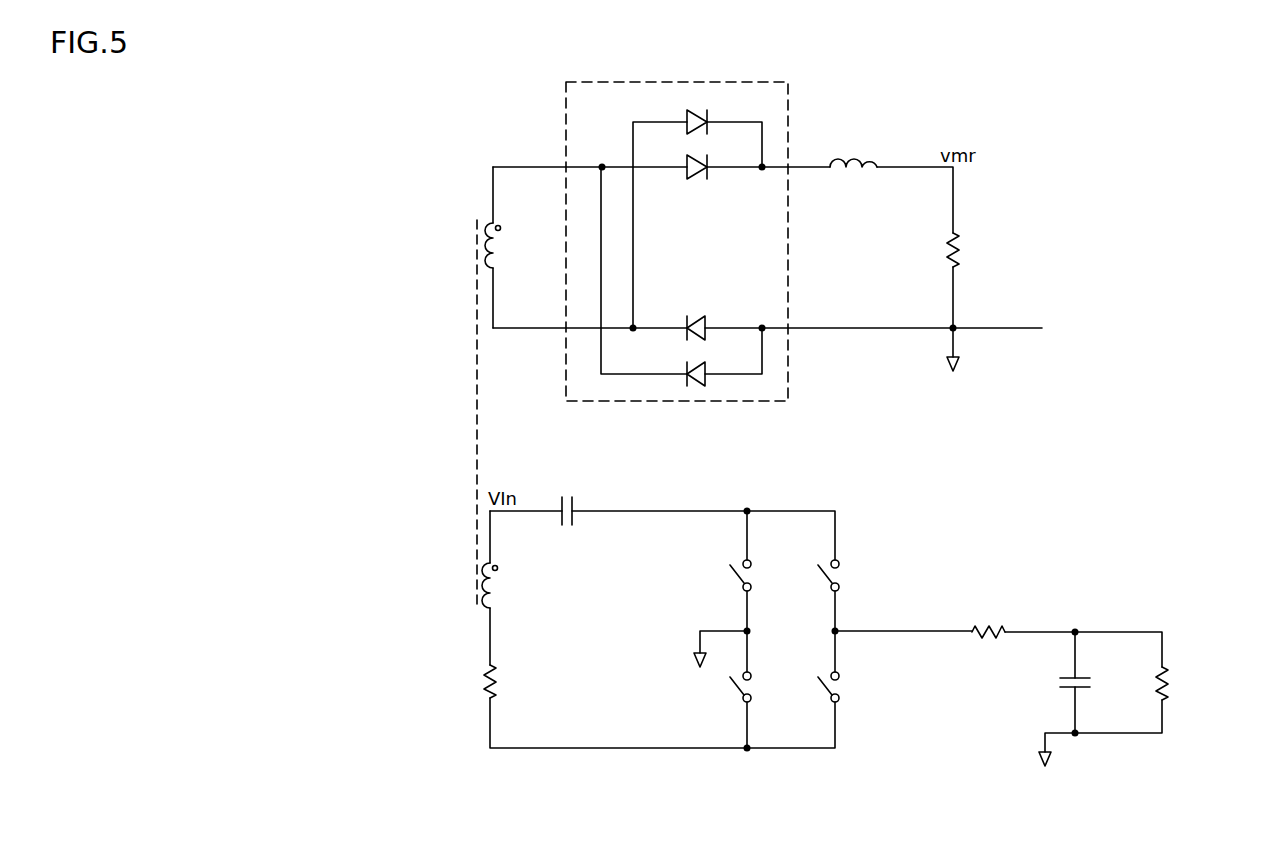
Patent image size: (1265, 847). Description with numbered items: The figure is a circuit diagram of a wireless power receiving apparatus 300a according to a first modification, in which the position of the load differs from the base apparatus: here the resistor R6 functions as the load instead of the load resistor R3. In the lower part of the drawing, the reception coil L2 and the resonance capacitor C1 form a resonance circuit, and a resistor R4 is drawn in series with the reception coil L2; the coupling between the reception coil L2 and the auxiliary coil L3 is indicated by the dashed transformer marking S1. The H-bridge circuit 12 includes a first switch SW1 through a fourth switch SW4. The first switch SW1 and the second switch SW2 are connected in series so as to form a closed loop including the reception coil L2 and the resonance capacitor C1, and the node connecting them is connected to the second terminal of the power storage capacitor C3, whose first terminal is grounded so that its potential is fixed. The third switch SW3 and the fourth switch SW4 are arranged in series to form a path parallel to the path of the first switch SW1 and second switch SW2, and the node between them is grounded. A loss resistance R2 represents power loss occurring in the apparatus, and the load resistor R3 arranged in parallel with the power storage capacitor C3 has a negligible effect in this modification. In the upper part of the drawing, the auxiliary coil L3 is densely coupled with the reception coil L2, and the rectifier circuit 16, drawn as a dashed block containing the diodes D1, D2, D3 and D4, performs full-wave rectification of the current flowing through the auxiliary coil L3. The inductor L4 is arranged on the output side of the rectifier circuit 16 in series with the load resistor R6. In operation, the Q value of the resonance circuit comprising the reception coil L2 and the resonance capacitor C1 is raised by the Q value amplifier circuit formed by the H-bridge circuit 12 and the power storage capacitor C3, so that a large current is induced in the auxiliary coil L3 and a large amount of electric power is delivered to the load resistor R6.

The rectifier circuit 16 is at (686, 82).
The H-bridge circuit 12 is at (873, 501).
The wireless power receiving apparatus 300a is at (841, 828).
The transformer S1 is at (417, 603).
The diode D1 is at (698, 311).
The diode D2 is at (698, 357).
The diode D3 is at (699, 151).
The diode D4 is at (699, 106).
The reception coil L2 is at (499, 587).
The auxiliary coil L3 is at (504, 247).
The inductor L4 is at (854, 156).
The resonance capacitor C1 is at (566, 492).
The power storage capacitor C3 is at (1095, 684).
The loss resistance R2 is at (989, 623).
The load resistor R3 is at (1170, 690).
The resistor R4 is at (501, 687).
The resistor R6 is at (966, 257).
The first switch SW1 is at (846, 574).
The second switch SW2 is at (846, 685).
The third switch SW3 is at (757, 569).
The fourth switch SW4 is at (752, 688).